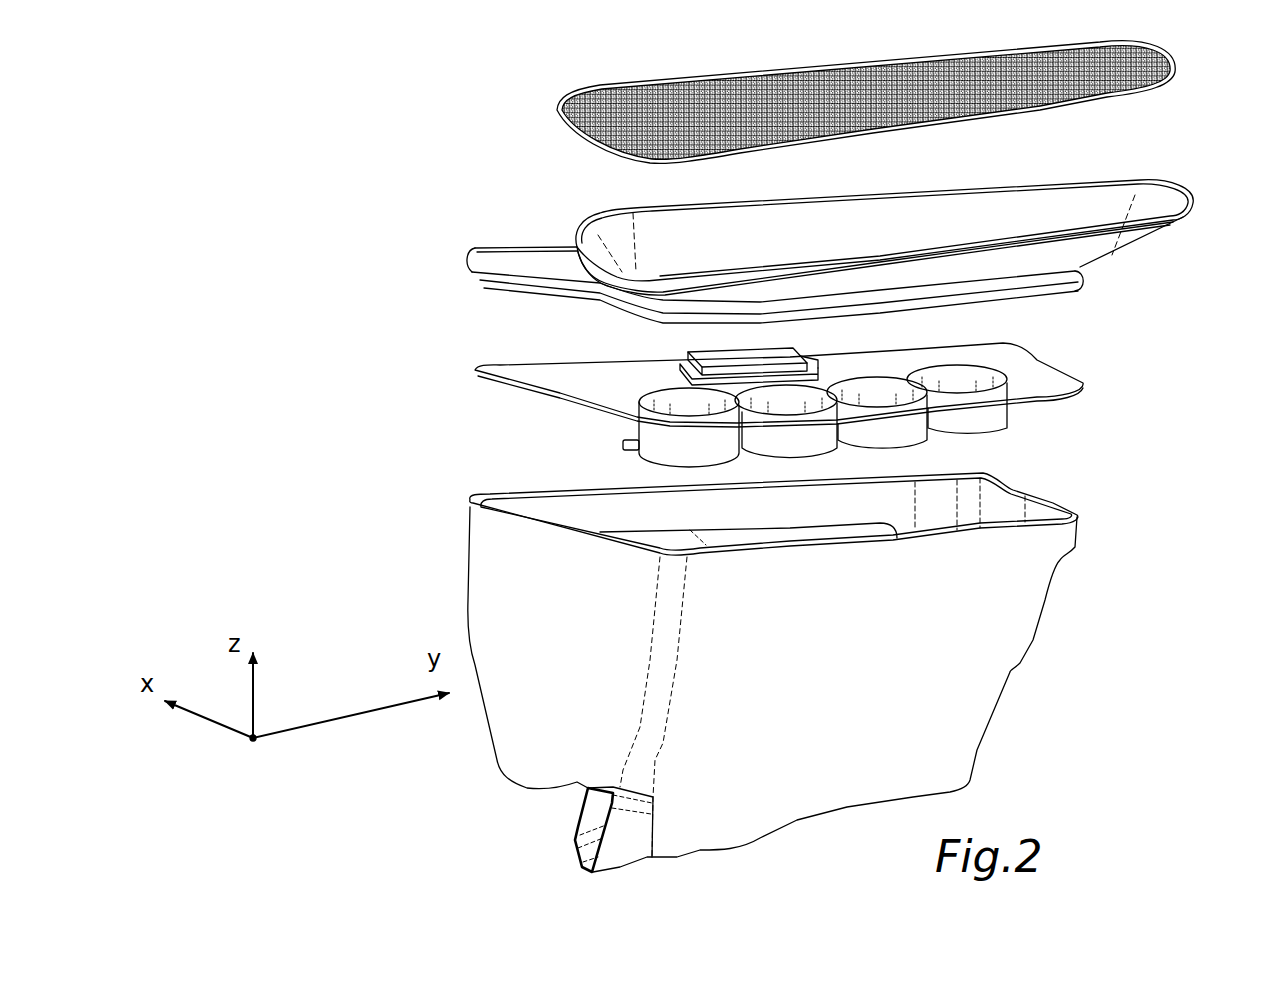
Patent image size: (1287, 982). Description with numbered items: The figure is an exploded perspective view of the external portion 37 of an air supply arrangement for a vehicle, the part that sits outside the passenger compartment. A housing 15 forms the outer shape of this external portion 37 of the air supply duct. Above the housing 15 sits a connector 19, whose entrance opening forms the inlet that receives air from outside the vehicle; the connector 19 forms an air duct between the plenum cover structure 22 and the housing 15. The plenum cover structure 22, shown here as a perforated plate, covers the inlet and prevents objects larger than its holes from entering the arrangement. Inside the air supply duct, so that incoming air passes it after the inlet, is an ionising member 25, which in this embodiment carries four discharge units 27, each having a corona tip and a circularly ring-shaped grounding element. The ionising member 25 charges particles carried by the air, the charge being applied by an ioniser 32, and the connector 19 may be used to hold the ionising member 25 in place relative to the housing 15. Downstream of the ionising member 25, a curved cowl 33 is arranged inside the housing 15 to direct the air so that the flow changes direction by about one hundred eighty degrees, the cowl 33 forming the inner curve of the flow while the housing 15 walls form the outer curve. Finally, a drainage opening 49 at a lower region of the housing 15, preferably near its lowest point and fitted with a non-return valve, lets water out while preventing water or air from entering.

The housing 15 is at (832, 656).
The connector 19 is at (1133, 273).
The plenum cover structure 22 is at (1156, 112).
The ionising member 25 is at (824, 394).
The discharge unit 27 is at (963, 382).
The ioniser 32 is at (713, 358).
The cowl 33 is at (717, 537).
The external portion 37 is at (440, 352).
The drainage opening 49 is at (593, 812).